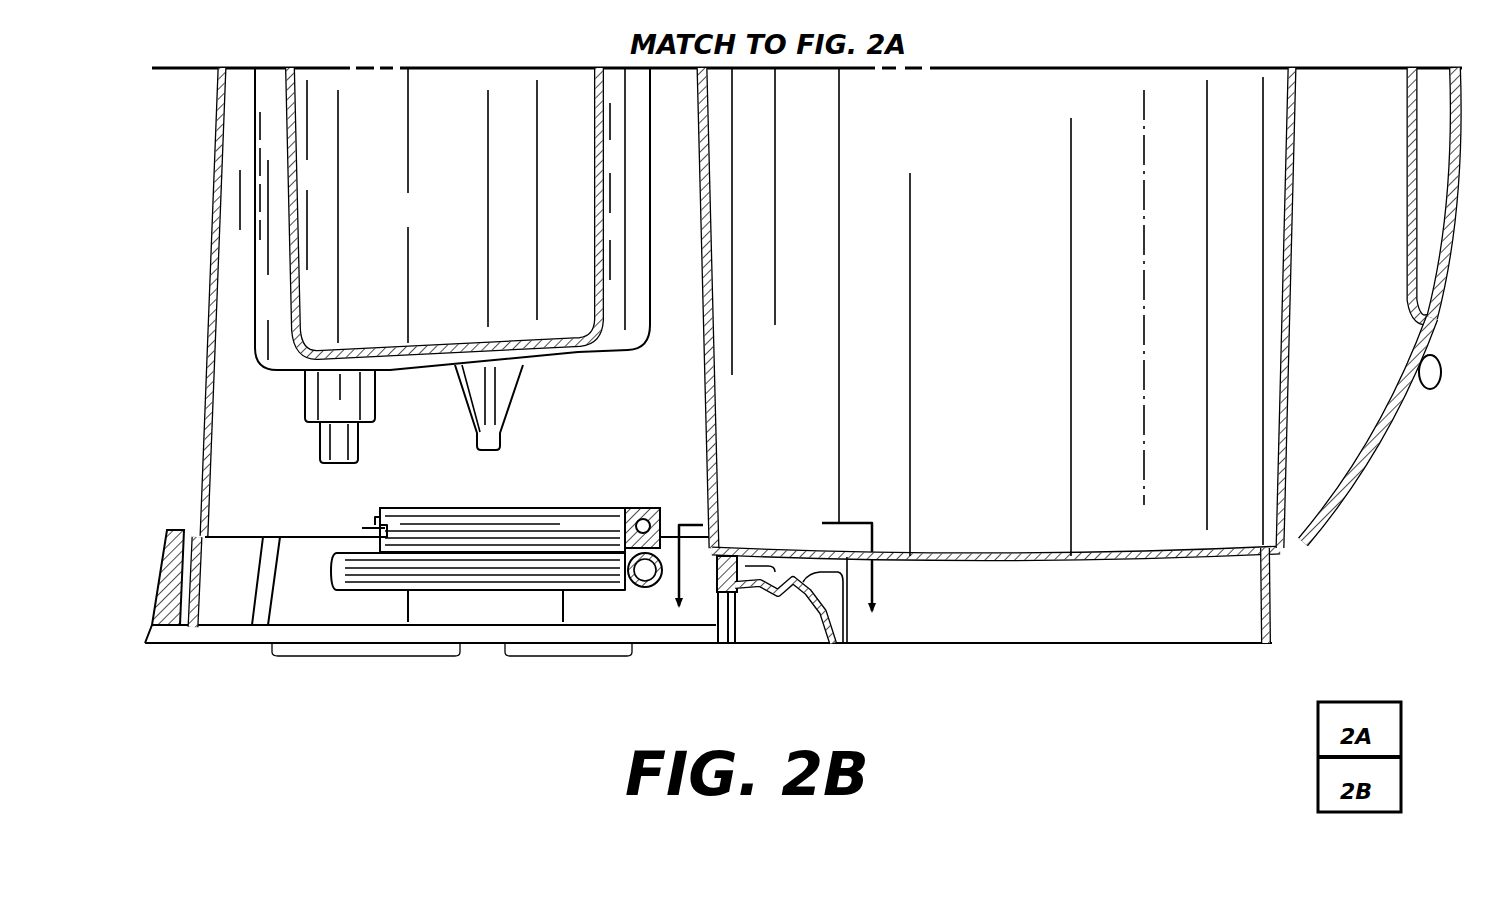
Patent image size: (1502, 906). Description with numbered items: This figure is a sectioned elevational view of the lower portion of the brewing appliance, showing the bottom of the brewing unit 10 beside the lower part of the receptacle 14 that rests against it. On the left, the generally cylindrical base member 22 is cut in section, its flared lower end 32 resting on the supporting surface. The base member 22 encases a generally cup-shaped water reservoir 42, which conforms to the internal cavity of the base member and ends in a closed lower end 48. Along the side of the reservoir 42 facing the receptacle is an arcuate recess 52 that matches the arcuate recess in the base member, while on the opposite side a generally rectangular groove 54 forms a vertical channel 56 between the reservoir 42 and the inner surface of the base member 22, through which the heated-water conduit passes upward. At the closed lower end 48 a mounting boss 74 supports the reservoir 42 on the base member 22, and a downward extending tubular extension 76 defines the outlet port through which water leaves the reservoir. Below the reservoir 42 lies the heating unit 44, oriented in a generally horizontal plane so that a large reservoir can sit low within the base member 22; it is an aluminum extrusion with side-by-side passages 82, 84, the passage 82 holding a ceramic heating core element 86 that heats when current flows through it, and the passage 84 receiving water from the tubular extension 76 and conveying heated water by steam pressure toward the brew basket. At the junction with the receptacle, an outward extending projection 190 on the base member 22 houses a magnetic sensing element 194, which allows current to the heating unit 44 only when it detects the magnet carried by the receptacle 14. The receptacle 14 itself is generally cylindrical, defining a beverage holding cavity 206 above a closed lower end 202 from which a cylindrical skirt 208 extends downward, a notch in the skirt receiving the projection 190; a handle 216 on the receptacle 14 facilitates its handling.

The brewing unit 10 is at (779, 575).
The receptacle 14 is at (1312, 283).
The base member 22 is at (203, 330).
The flared lower end 32 is at (148, 540).
The water reservoir 42 is at (467, 202).
The heating unit 44 is at (497, 588).
The closed lower end 48 is at (575, 345).
The arcuate recess 52 is at (625, 228).
The rectangular groove 54 is at (264, 150).
The channel 56 is at (240, 200).
The mounting boss 74 is at (498, 432).
The tubular extension 76 is at (355, 390).
The passage 82 is at (640, 512).
The passage 84 is at (638, 590).
The ceramic heating core element 86 is at (373, 528).
The projection 190 is at (812, 630).
The magnetic sensing element 194 is at (760, 600).
The closed lower end 202 is at (1058, 560).
The beverage holding cavity 206 is at (1018, 397).
The cylindrical skirt 208 is at (1275, 583).
The handle 216 is at (1408, 378).